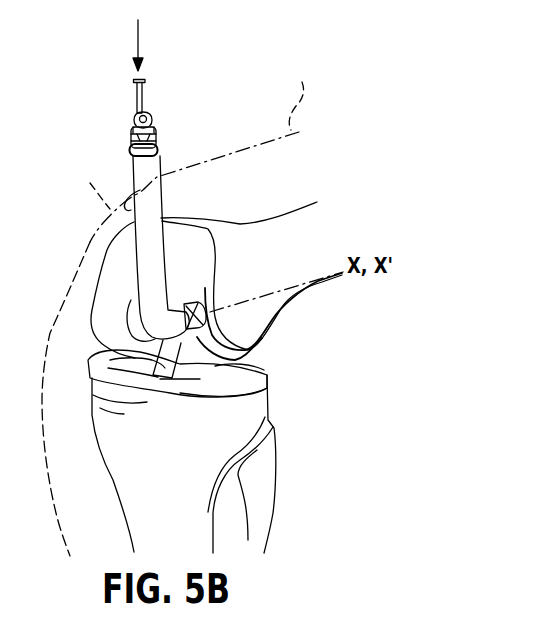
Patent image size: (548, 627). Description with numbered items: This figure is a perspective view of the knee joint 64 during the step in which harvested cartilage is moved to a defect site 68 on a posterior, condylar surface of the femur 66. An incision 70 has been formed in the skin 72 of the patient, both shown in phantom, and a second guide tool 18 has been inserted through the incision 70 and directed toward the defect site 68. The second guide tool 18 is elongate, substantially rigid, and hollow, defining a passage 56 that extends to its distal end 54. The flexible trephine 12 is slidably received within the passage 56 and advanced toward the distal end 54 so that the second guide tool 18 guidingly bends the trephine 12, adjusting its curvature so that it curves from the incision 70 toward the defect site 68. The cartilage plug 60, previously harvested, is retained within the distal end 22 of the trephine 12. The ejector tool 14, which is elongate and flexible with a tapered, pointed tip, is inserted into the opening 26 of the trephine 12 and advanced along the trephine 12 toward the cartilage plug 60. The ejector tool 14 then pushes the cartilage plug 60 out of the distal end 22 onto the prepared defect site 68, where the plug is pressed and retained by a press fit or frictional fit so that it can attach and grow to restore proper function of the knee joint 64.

The ejector tool 14 is at (144, 109).
The opening 26 is at (150, 108).
The trephine 12 is at (168, 131).
The passage 56 is at (126, 124).
The distal end 54 is at (164, 150).
The second guide tool 18 is at (133, 182).
The incision 70 is at (90, 183).
The skin 72 is at (202, 149).
The femur 66 is at (287, 233).
The cartilage plug 60 is at (205, 288).
The defect site 68 is at (262, 338).
The distal end 22 is at (247, 380).
The knee joint 64 is at (318, 410).